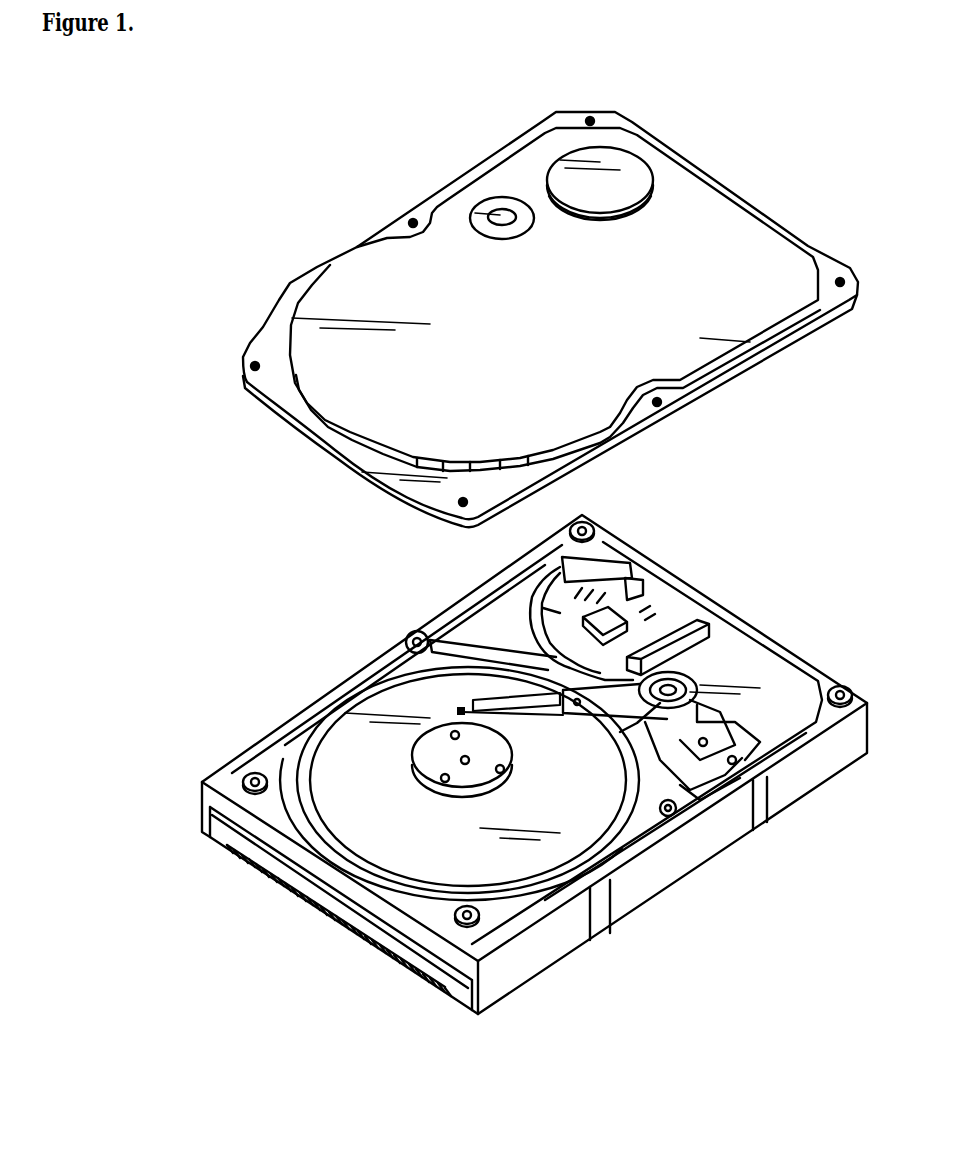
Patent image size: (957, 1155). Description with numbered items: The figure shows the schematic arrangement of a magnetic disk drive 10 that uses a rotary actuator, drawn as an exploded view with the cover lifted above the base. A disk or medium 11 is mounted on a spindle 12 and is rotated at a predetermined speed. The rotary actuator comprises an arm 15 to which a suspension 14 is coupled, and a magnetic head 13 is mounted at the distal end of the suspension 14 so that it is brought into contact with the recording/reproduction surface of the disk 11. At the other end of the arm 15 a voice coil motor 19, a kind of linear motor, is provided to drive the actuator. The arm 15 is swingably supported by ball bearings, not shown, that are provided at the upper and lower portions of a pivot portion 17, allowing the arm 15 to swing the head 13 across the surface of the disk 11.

The magnetic disk drive 10 is at (190, 973).
The disk 11 is at (323, 753).
The spindle 12 is at (432, 772).
The magnetic head 13 is at (455, 708).
The suspension 14 is at (541, 712).
The arm 15 is at (588, 712).
The pivot portion 17 is at (708, 652).
The voice coil motor 19 is at (767, 668).